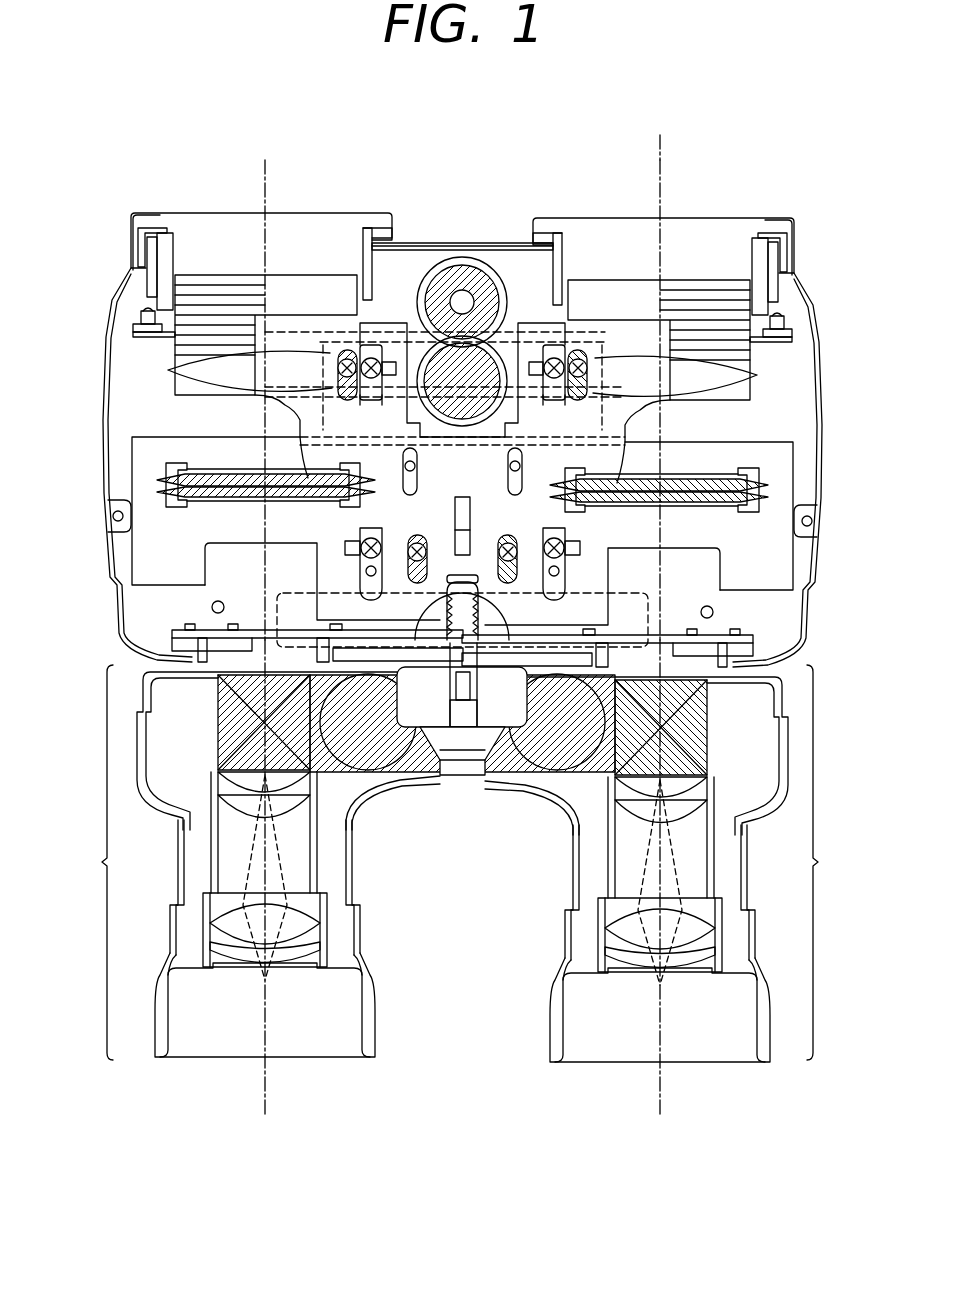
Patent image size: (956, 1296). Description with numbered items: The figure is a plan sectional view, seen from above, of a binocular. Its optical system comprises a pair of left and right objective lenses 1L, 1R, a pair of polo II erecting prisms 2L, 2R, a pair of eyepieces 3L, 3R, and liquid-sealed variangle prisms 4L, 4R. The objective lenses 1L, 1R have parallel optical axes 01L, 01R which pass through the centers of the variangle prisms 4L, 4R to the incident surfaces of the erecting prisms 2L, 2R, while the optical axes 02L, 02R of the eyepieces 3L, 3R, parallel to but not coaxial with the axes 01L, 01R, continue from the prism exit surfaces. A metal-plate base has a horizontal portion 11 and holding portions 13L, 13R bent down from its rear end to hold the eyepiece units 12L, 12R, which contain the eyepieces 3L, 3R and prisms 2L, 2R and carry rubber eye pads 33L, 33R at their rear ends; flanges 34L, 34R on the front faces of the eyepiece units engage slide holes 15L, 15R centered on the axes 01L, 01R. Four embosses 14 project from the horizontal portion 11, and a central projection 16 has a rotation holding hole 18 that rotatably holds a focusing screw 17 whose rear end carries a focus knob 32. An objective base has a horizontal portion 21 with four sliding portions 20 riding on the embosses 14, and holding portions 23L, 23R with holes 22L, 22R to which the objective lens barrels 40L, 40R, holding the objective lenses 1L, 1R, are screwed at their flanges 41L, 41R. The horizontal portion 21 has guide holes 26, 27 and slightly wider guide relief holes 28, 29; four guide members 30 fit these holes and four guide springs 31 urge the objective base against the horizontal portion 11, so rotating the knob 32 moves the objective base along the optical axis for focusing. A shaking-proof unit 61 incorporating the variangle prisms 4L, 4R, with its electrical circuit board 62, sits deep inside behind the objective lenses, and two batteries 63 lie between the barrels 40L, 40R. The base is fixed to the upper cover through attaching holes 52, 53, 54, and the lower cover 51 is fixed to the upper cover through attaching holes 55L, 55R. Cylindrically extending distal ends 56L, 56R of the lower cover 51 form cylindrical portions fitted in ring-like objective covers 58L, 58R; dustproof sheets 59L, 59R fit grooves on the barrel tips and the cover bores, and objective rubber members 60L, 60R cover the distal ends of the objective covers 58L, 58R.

The left objective lens 1L is at (230, 378).
The right objective lens 1R is at (690, 378).
The left polo II erecting prism 2L is at (235, 740).
The right polo II erecting prism 2R is at (690, 745).
The left eyepiece 3L is at (240, 858).
The right eyepiece 3R is at (690, 862).
The left liquid-sealed variangle prism 4L is at (160, 484).
The right liquid-sealed variangle prism 4R is at (765, 488).
The horizontal portion 11 is at (715, 560).
The left eyepiece unit 12L is at (211, 862).
The right eyepiece unit 12R is at (712, 862).
The left holding portion 13L is at (178, 665).
The right holding portion 13R is at (750, 670).
The emboss 14 is at (345, 356).
The left slide hole 15L is at (228, 680).
The right slide hole 15R is at (697, 685).
The projection 16 is at (485, 650).
The focusing screw 17 is at (470, 690).
The rotation holding hole 18 is at (445, 690).
The sliding portion 20 is at (404, 470).
The horizontal portion 21 is at (298, 425).
The left hole 22L is at (180, 337).
The right hole 22R is at (745, 342).
The left holding portion 23L is at (145, 318).
The right holding portion 23R is at (780, 323).
The guide hole 26 is at (375, 350).
The guide hole 27 is at (340, 590).
The guide relief hole 28 is at (622, 428).
The guide relief hole 29 is at (585, 590).
The guide member 30 is at (372, 357).
The guide spring 31 is at (487, 372).
The focus knob 32 is at (510, 735).
The left rubber eye pad 33L is at (160, 1058).
The right rubber eye pad 33R is at (765, 1063).
The left flange 34L is at (180, 634).
The right flange 34R is at (745, 638).
The left objective lens barrel 40L is at (300, 280).
The right objective lens barrel 40R is at (645, 290).
The left flange 41L is at (290, 330).
The right flange 41R is at (630, 330).
The lower cover 51 is at (818, 430).
The attaching hole 52 is at (716, 608).
The attaching hole 53 is at (212, 606).
The attaching hole 54 is at (521, 470).
The left attaching hole 55L is at (108, 516).
The right attaching hole 55R is at (817, 521).
The left cylindrically extending distal end 56L is at (148, 262).
The right cylindrically extending distal end 56R is at (778, 267).
The left objective cover 58L is at (145, 228).
The right objective cover 58R is at (778, 233).
The left dustproof sheet 59L is at (165, 233).
The right dustproof sheet 59R is at (758, 238).
The left objective rubber member 60L is at (133, 215).
The right objective rubber member 60R is at (792, 220).
The shaking-proof unit 61 is at (140, 555).
The electrical circuit board 62 is at (140, 440).
The battery 63 is at (462, 290).
The left objective optical axis 01L is at (266, 165).
The right objective optical axis 01R is at (661, 150).
The left eyepiece optical axis 02L is at (266, 1040).
The right eyepiece optical axis 02R is at (660, 1040).